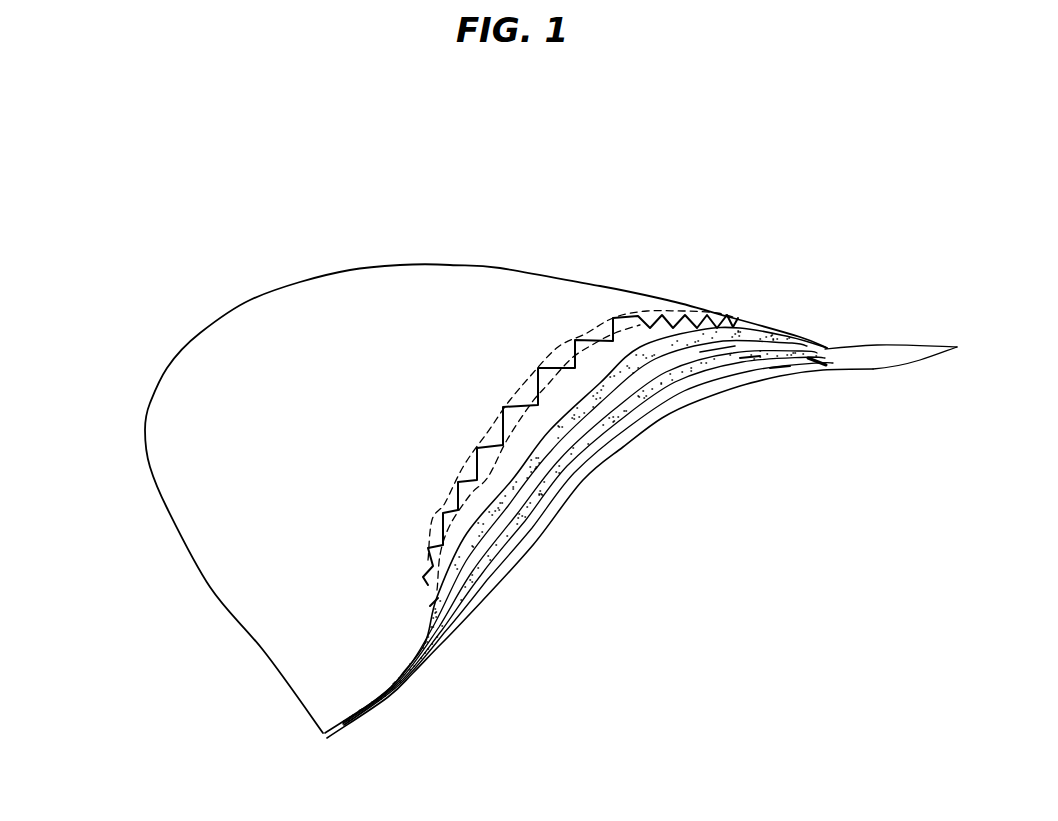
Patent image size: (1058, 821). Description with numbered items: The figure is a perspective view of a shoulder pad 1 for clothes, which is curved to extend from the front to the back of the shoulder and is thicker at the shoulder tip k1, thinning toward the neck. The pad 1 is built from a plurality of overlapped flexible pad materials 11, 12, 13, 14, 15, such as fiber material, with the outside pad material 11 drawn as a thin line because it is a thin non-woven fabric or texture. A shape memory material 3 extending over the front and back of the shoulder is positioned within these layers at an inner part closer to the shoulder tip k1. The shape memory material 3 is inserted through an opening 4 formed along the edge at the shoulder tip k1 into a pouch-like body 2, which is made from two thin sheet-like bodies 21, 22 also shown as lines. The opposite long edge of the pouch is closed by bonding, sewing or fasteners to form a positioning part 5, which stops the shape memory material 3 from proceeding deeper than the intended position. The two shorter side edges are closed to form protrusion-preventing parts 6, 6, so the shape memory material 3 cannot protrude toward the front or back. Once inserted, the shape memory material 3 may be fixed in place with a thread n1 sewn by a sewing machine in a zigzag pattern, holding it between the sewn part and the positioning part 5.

The pad 1 is at (136, 450).
The pouch-like body 2 is at (870, 392).
The shape memory material 3 is at (427, 567).
The opening 4 is at (718, 350).
The positioning part 5 is at (517, 390).
The protrusion-preventing part 6 is at (822, 352).
The pad material 11 is at (668, 335).
The pad material 12 is at (715, 345).
The pad material 13 is at (585, 448).
The pad material 14 is at (618, 437).
The pad material 15 is at (652, 418).
The sheet-like body 21 is at (782, 370).
The sheet-like body 22 is at (745, 355).
The thread n1 is at (437, 550).
The shoulder tip k1 is at (547, 544).